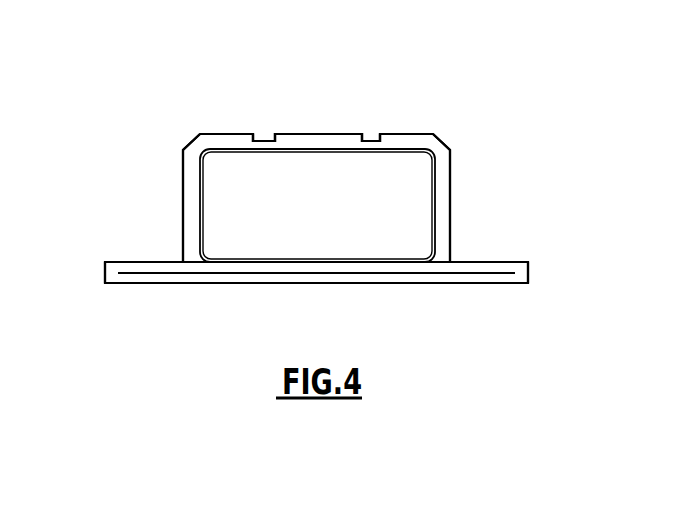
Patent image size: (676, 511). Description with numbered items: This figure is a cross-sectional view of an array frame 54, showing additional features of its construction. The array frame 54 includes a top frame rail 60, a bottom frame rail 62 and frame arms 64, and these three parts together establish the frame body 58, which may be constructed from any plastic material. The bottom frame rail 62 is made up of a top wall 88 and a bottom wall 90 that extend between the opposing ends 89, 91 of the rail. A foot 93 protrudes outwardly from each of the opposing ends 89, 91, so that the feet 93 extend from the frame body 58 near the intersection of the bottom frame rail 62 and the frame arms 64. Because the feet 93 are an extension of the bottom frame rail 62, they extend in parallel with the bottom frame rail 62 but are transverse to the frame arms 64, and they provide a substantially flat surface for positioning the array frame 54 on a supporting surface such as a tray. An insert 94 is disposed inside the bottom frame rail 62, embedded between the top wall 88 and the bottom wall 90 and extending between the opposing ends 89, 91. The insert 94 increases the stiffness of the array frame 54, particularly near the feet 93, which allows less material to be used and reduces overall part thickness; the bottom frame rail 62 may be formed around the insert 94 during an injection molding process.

The array frame 54 is at (302, 123).
The frame body 58 is at (445, 143).
The top frame rail 60 is at (321, 142).
The bottom frame rail 62 is at (333, 276).
The frame arms 64 is at (190, 195).
The top wall 88 is at (287, 261).
The opposing end 89 is at (104, 275).
The bottom wall 90 is at (285, 283).
The opposing end 91 is at (528, 284).
The foot 93 is at (132, 268).
The insert 94 is at (193, 264).